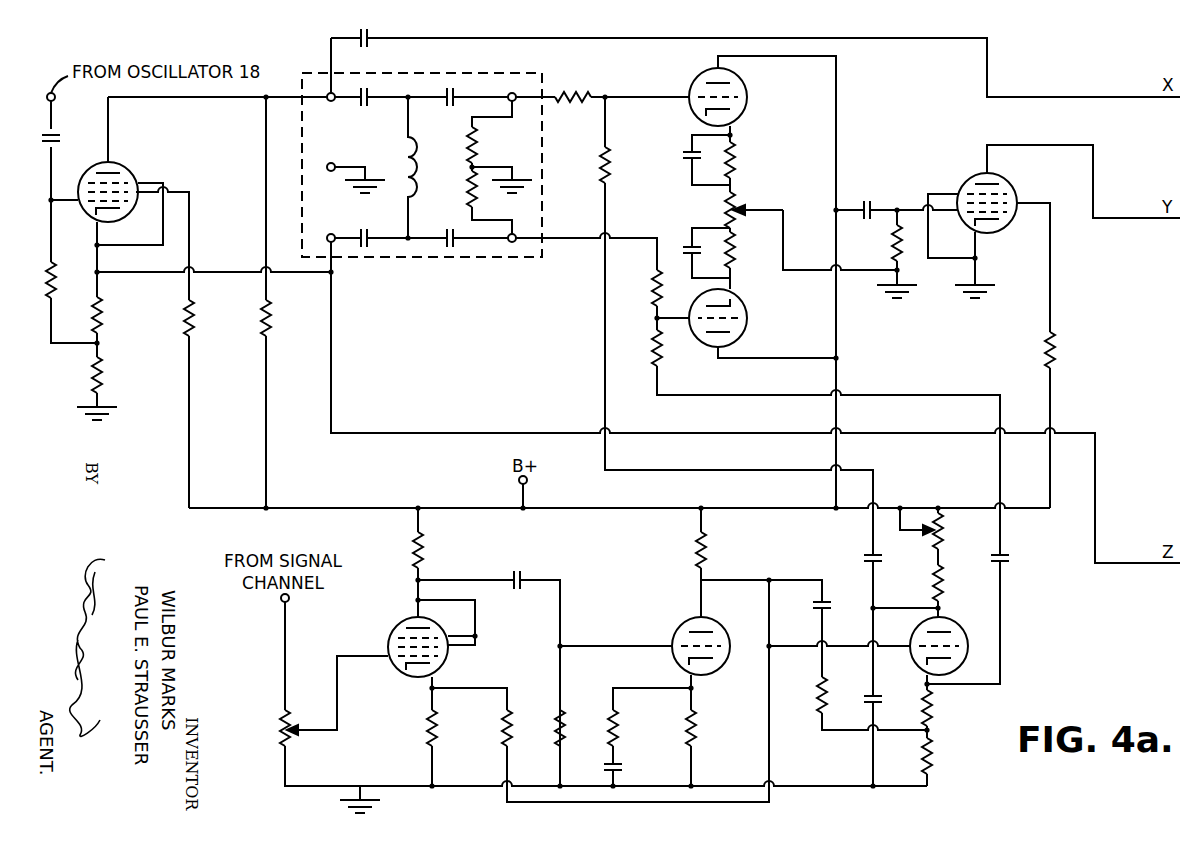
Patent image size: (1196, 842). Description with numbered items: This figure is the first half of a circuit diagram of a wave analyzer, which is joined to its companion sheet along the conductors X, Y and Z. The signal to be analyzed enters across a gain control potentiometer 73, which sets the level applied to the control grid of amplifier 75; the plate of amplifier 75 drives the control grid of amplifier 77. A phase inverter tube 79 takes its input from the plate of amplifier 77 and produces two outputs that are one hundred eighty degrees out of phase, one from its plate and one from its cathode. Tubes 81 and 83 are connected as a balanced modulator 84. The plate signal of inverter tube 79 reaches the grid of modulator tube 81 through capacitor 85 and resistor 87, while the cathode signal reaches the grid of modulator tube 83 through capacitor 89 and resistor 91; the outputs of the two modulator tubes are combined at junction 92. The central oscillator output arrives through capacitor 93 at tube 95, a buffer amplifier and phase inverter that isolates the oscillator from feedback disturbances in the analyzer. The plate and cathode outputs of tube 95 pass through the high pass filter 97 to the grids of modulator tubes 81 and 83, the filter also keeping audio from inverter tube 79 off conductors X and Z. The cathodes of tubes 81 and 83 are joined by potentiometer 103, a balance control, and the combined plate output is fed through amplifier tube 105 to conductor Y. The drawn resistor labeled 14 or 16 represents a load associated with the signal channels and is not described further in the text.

The resistor (load of channel 14) 14 is at (1092, 350).
The resistor (load of channel 16) 16 is at (1054, 347).
The gain control potentiometer 73 is at (290, 731).
The amplifier 75 is at (398, 626).
The amplifier 77 is at (685, 625).
The phase inverter tube 79 is at (955, 620).
The modulator tube 81 is at (748, 95).
The modulator tube 83 is at (748, 313).
The balanced modulator 84 is at (791, 154).
The capacitor 85 is at (866, 558).
The resistor 87 is at (612, 162).
The capacitor 89 is at (1011, 562).
The resistor 91 is at (656, 343).
The junction 92 is at (836, 211).
The capacitor 93 is at (58, 140).
The tube 95 is at (132, 168).
The high pass filter 97 is at (541, 80).
The potentiometer 103 is at (748, 208).
The amplifier tube 105 is at (1009, 182).